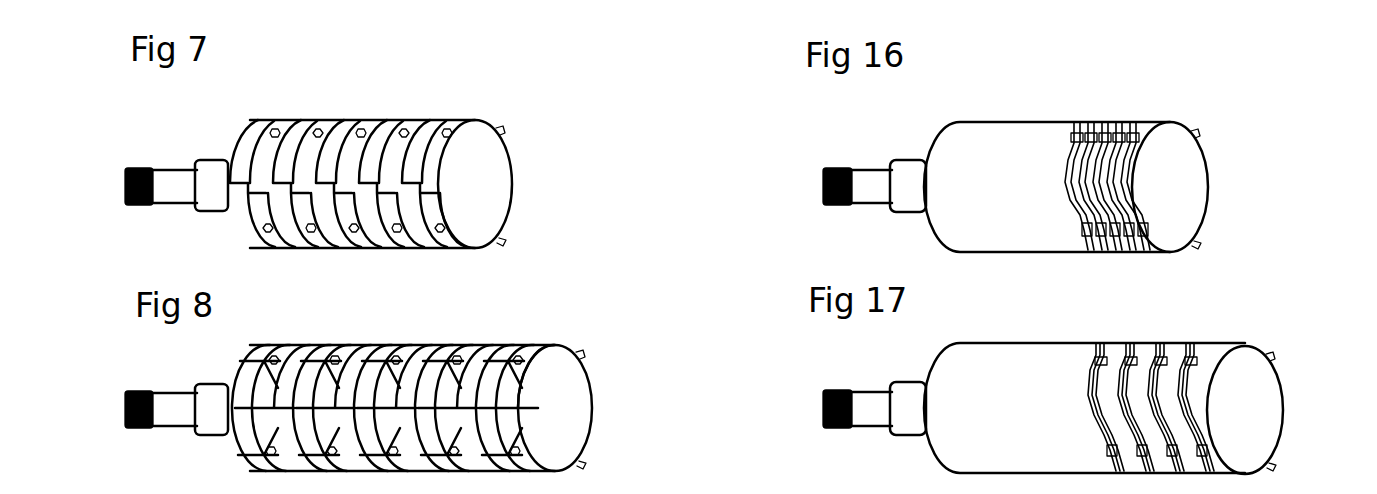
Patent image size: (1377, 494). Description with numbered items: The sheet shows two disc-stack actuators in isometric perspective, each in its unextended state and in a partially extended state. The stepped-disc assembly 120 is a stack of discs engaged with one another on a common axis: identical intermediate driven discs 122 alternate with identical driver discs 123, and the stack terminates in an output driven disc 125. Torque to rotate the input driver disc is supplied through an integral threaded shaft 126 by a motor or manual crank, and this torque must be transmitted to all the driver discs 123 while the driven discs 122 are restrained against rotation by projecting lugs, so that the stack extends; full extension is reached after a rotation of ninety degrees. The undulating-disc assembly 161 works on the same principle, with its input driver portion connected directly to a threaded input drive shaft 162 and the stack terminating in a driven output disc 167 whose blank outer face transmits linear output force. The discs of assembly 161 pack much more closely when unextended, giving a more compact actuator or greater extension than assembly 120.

In FIG. 7, the assembly 120 is at (317, 117).
In FIG. 8, the assembly 120 is at (358, 340).
In FIG. 7, the intermediate driven disc 122 is at (405, 248).
In FIG. 7, the driver disc 123 is at (428, 248).
In FIG. 7, the output driven disc 125 is at (512, 170).
In FIG. 8, the output driven disc 125 is at (575, 355).
In FIG. 7, the threaded shaft 126 is at (186, 168).
In FIG. 8, the threaded shaft 126 is at (186, 392).
In FIG. 16, the assembly 161 is at (1015, 118).
In FIG. 17, the assembly 161 is at (1020, 338).
In FIG. 16, the threaded input drive shaft 162 is at (864, 168).
In FIG. 17, the threaded input drive shaft 162 is at (864, 390).
In FIG. 16, the driven output disc 167 is at (1210, 185).
In FIG. 17, the driven output disc 167 is at (1285, 413).